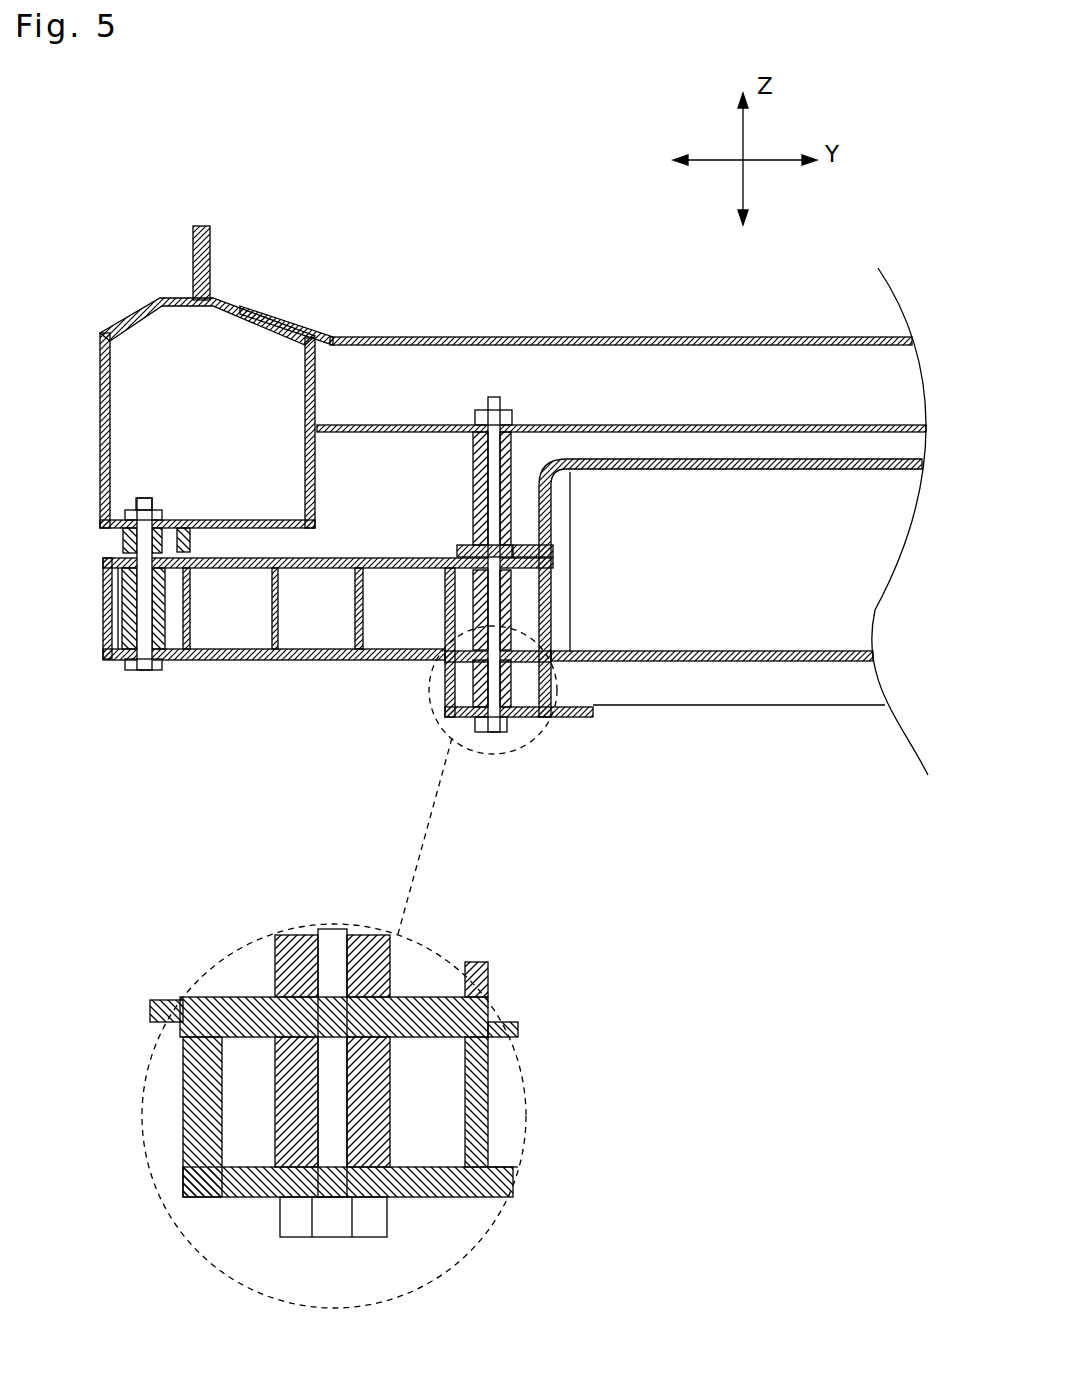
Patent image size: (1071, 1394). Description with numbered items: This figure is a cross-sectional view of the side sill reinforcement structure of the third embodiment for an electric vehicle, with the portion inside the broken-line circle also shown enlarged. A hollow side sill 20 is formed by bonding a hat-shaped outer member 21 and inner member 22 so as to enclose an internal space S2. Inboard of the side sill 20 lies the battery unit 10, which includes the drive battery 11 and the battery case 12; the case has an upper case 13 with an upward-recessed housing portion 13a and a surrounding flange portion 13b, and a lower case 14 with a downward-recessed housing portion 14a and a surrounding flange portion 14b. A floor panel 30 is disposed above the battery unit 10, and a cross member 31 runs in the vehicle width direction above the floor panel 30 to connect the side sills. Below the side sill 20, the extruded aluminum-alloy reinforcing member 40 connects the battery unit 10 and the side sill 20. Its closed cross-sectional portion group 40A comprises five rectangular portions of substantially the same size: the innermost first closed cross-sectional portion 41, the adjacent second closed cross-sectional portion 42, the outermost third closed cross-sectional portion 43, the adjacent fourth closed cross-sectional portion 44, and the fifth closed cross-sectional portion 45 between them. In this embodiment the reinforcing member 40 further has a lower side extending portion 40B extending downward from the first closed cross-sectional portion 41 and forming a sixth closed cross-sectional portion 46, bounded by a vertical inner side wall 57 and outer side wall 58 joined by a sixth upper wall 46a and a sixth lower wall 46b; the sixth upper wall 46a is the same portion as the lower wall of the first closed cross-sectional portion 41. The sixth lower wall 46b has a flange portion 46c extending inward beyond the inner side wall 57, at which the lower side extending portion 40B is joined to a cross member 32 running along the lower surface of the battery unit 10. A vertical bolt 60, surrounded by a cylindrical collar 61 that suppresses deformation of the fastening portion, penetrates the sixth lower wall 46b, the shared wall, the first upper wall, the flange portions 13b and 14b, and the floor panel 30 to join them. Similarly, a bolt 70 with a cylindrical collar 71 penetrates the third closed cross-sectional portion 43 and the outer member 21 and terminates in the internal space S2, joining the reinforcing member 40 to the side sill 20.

The battery unit 10 is at (790, 794).
The drive battery 11 is at (842, 612).
The battery case 12 is at (808, 662).
The upper case 13 is at (590, 293).
The housing portion 13a is at (682, 459).
The flange portion 13b is at (524, 545).
The lower case 14 is at (580, 812).
The housing portion 14a is at (660, 662).
The flange portion 14b is at (567, 617).
The side sill 20 is at (140, 153).
The outer member 21 is at (158, 298).
The inner member 22 is at (222, 300).
The floor panel 30 is at (367, 425).
The cross member 31 is at (345, 336).
The cross member 32 is at (735, 706).
The reinforcing member 40 is at (197, 681).
The closed cross-sectional portion group 40A is at (321, 669).
The lower side extending portion 40B is at (524, 651).
The first closed cross-sectional portion 41 is at (530, 722).
The second closed cross-sectional portion 42 is at (416, 620).
The third closed cross-sectional portion 43 is at (113, 650).
The fourth closed cross-sectional portion 44 is at (244, 620).
The fifth closed cross-sectional portion 45 is at (334, 620).
The sixth closed cross-sectional portion 46 is at (520, 697).
The sixth upper wall 46a is at (447, 1037).
The sixth lower wall 46b is at (252, 1193).
The flange portion 46c is at (587, 718).
The inner side wall 57 is at (483, 1127).
The outer side wall 58 is at (277, 1130).
The bolt 60 is at (489, 733).
The cylindrical collar 61 is at (472, 488).
The bolt 70 is at (139, 672).
The cylindrical collar 71 is at (123, 545).
The internal space S2 is at (224, 424).